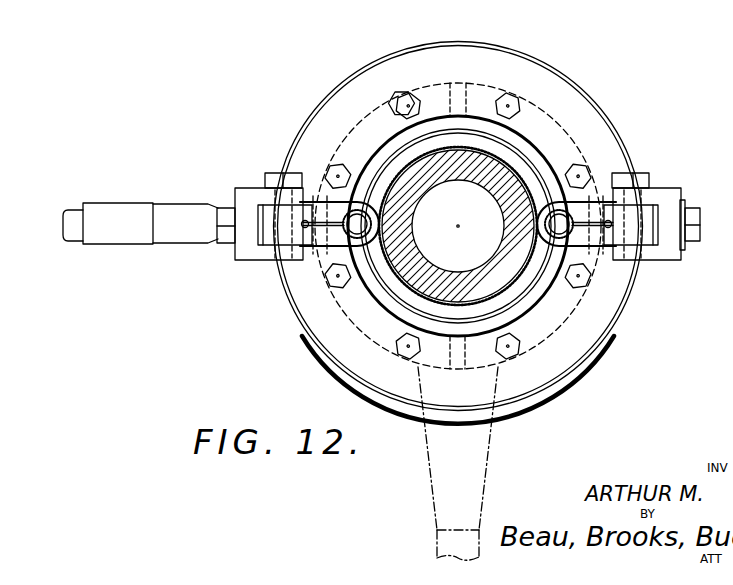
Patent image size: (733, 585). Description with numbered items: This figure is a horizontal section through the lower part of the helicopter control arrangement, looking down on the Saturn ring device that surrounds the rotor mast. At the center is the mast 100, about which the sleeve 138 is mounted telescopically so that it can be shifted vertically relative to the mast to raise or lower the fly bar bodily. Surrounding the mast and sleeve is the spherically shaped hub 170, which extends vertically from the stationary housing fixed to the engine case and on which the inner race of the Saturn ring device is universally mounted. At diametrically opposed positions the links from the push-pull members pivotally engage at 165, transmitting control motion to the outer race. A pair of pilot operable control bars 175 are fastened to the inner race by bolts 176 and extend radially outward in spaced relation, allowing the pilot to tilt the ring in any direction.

The mast 100 is at (487, 167).
The sleeve 138 is at (435, 290).
The pivotal engagement 165 is at (268, 173).
The spherically shaped hub 170 is at (367, 277).
The pilot operable control bar 175 is at (118, 212).
The bolt 176 is at (588, 280).